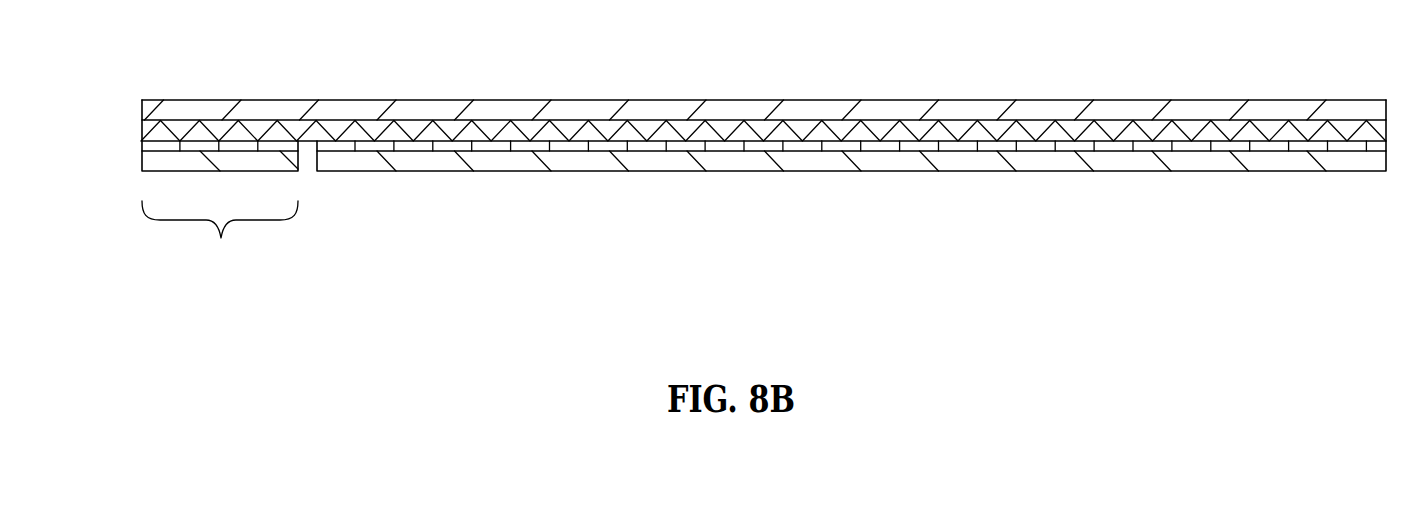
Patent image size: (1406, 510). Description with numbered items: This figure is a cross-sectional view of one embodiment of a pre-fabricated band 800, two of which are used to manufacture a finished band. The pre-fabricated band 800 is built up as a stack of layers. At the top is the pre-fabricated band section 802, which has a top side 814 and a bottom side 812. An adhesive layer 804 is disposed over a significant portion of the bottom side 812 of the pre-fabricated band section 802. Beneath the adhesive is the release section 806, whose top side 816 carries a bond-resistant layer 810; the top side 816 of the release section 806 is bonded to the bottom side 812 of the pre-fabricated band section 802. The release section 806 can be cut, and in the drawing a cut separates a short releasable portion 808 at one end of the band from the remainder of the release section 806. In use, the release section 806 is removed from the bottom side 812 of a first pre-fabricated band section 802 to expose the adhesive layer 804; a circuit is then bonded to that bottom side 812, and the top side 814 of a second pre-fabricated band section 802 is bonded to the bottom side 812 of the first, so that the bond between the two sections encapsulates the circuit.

The pre-fabricated band 800 is at (712, 180).
The pre-fabricated band section 802 is at (142, 112).
The adhesive layer 804 is at (712, 175).
The release section 806 is at (142, 162).
The releasable portion 808 is at (220, 239).
The bond-resistant layer 810 is at (712, 196).
The bottom side 812 is at (1042, 125).
The top side 814 is at (955, 100).
The top side 816 is at (1208, 151).